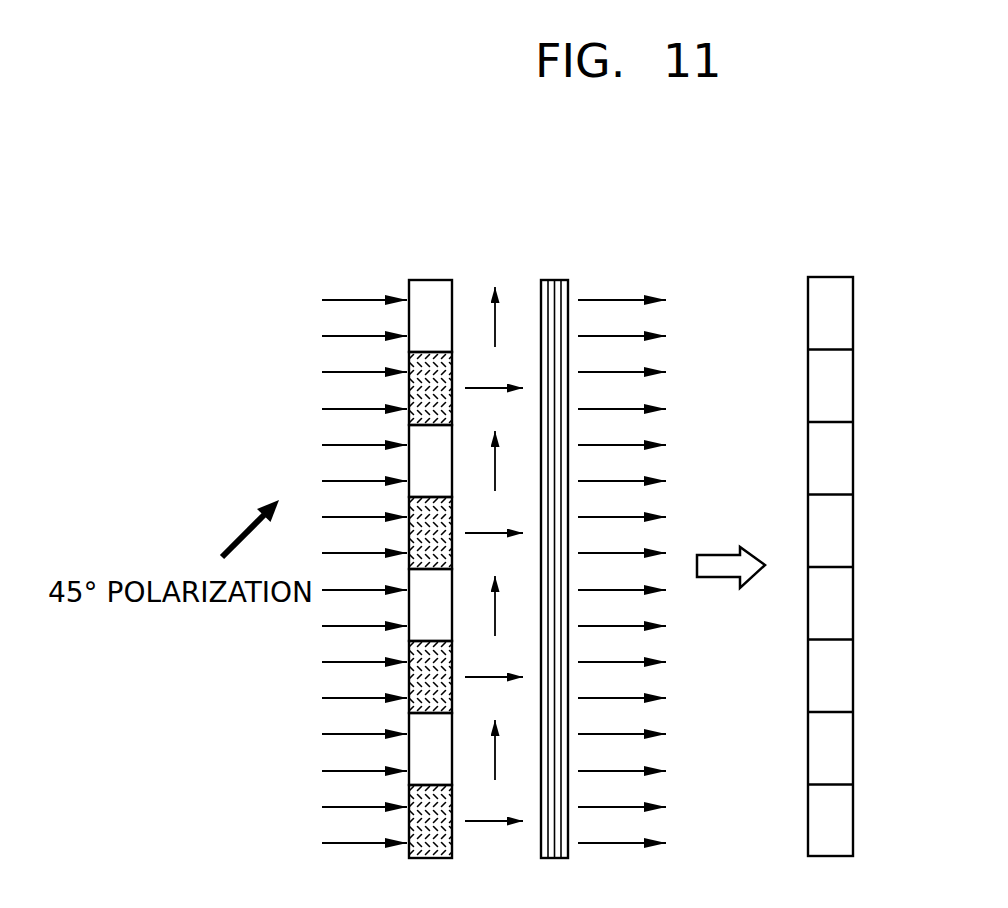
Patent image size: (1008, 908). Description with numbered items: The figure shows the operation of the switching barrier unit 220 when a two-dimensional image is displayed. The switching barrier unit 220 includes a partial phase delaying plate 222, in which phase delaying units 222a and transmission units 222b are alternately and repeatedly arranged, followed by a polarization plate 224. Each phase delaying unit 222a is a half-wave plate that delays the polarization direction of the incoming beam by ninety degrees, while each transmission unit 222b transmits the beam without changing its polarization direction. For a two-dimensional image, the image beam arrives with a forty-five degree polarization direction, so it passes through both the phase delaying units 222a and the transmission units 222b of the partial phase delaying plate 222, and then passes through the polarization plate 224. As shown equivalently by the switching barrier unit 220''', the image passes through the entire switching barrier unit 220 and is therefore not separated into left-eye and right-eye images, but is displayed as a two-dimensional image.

The switching barrier unit 220 is at (403, 492).
The partial phase delaying plate 222 is at (430, 279).
The phase delaying unit 222a is at (410, 320).
The transmission unit 222b is at (410, 388).
The polarization plate 224 is at (553, 279).
The switching barrier unit (equivalent state) 220''' is at (834, 530).